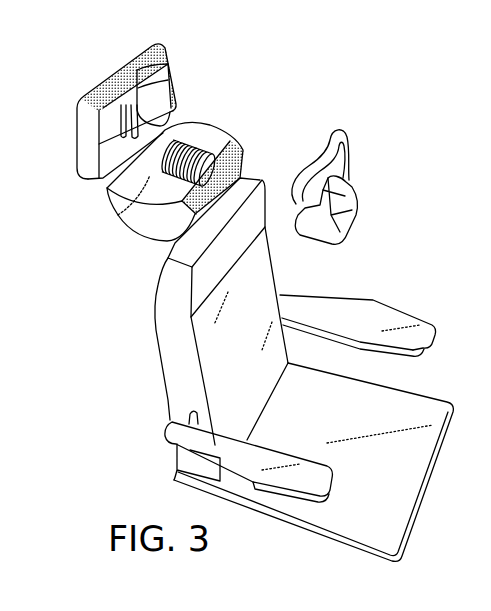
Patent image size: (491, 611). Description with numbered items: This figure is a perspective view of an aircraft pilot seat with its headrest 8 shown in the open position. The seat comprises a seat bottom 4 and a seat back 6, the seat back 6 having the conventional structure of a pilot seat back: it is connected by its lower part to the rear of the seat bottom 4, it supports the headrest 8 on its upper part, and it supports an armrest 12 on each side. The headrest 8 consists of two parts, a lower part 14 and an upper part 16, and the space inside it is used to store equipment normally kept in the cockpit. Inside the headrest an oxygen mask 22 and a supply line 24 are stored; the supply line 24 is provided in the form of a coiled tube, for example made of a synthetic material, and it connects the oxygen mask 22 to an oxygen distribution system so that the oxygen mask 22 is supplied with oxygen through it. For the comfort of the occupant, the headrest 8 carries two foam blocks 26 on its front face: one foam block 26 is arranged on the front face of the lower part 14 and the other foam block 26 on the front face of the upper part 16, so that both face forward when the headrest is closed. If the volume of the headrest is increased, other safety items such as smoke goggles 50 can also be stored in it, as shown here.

The seat bottom 4 is at (423, 420).
The seat back 6 is at (168, 320).
The headrest 8 is at (207, 104).
The armrest 12 is at (357, 315).
The lower part 14 is at (143, 223).
The upper part 16 is at (89, 163).
The oxygen mask 22 is at (349, 202).
The supply line 24 is at (203, 153).
The foam block 26 is at (115, 84).
The smoke goggles 50 is at (157, 87).